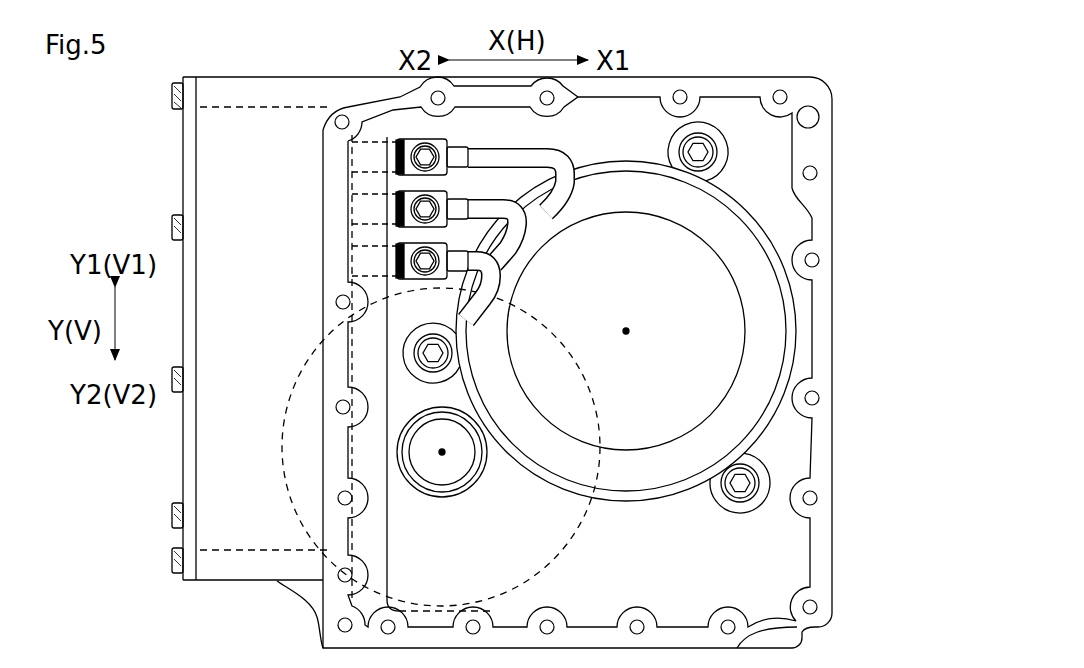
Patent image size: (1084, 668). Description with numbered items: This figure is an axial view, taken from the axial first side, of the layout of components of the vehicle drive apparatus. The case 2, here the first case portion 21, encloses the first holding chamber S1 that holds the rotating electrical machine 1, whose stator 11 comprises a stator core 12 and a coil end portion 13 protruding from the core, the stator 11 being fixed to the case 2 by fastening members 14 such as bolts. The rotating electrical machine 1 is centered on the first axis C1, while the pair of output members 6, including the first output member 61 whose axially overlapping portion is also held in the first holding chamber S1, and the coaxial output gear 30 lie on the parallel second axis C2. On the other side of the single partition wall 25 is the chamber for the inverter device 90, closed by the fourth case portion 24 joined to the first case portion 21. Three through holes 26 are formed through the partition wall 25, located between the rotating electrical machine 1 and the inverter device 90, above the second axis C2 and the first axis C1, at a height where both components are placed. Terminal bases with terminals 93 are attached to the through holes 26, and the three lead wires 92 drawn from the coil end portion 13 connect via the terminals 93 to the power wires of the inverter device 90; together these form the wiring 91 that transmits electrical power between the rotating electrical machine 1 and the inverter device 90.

The rotating electrical machine 1 is at (766, 157).
The case 2 is at (836, 425).
The stator 11 is at (773, 235).
The stator core 12 is at (641, 155).
The coil end portion 13 is at (648, 480).
The fastening member 14 is at (698, 165).
The first case portion 21 is at (835, 276).
The fourth case portion 24 is at (182, 172).
The partition wall 25 is at (391, 523).
The through holes 26 is at (386, 212).
The output gear 30 is at (278, 452).
The output members 6 is at (471, 486).
The first output member 61 is at (444, 497).
The inverter device 90 is at (272, 98).
The wiring 91 is at (536, 146).
The lead wires 92 is at (549, 215).
The terminals 93 is at (405, 140).
The first axis C1 is at (626, 331).
The second axis C2 is at (442, 452).
The first holding chamber S1 is at (626, 593).